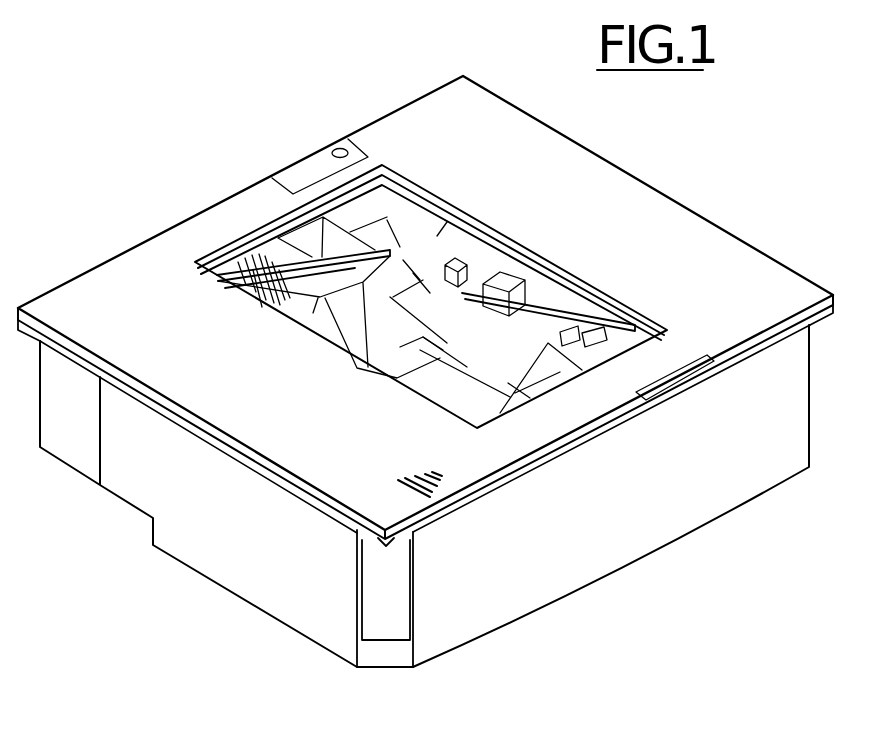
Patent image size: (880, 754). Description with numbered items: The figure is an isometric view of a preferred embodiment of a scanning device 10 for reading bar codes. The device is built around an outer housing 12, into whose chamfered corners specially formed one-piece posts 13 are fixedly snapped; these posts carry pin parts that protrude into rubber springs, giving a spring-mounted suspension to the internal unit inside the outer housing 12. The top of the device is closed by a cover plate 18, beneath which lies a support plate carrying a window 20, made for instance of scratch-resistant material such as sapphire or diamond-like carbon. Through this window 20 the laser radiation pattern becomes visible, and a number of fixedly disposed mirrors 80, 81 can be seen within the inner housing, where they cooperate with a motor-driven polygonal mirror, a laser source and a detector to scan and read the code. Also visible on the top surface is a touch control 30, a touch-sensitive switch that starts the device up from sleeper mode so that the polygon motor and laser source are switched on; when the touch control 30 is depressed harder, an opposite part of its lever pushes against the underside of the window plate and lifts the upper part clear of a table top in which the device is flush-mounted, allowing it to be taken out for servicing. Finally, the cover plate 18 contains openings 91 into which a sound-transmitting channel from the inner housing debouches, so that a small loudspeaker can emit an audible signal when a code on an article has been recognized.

The scanning device 10 is at (216, 635).
The outer housing 12 is at (742, 482).
The posts 13 is at (387, 623).
The cover plate 18 is at (599, 233).
The window 20 is at (252, 278).
The touch control 30 is at (337, 147).
The mirror 80 is at (417, 275).
The mirror 81 is at (388, 276).
The openings 91 is at (414, 482).